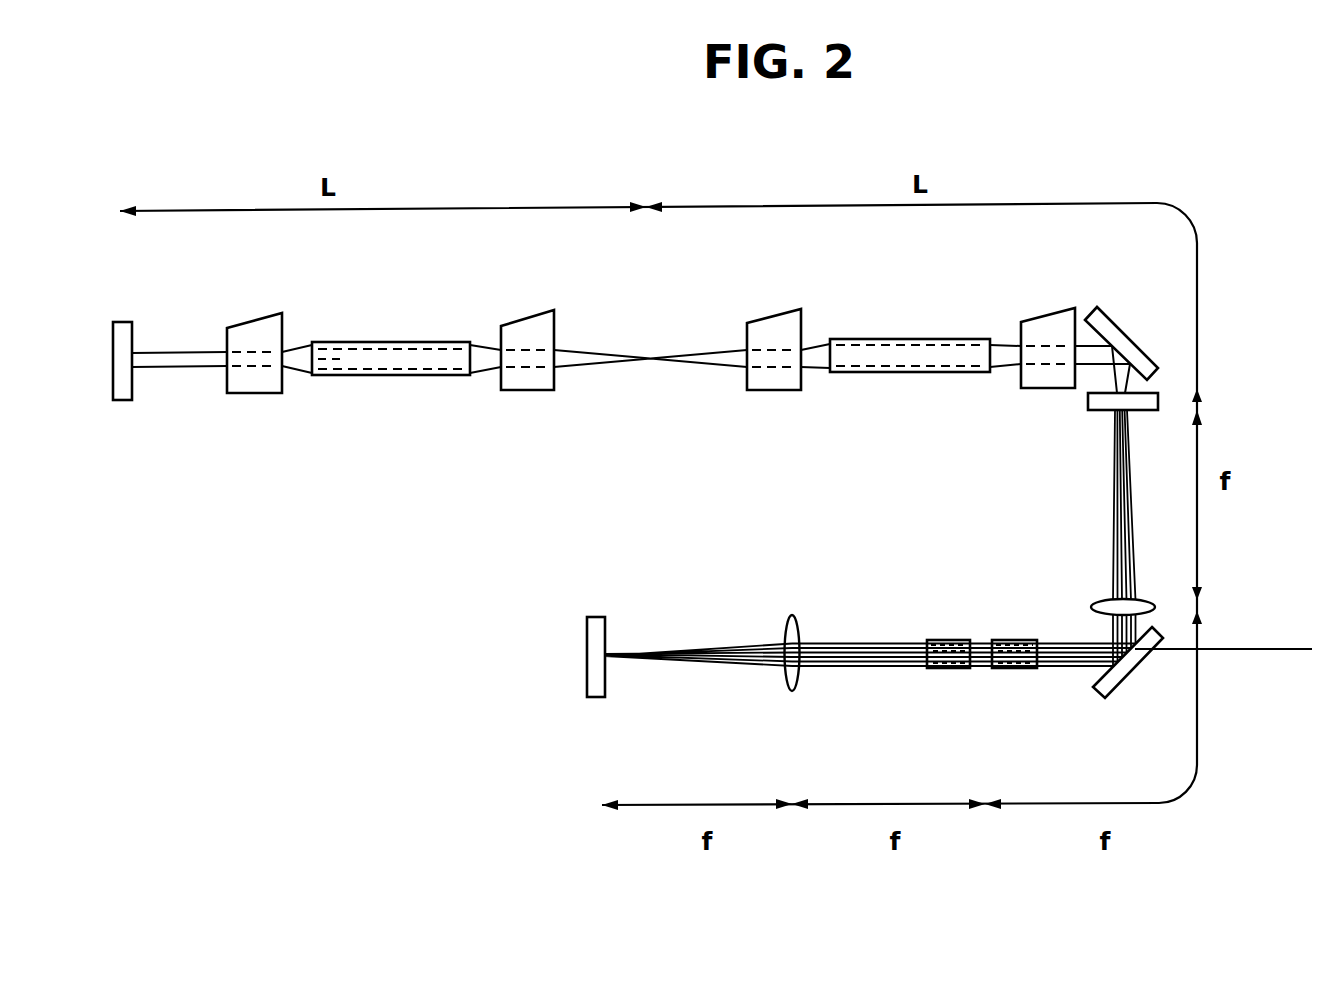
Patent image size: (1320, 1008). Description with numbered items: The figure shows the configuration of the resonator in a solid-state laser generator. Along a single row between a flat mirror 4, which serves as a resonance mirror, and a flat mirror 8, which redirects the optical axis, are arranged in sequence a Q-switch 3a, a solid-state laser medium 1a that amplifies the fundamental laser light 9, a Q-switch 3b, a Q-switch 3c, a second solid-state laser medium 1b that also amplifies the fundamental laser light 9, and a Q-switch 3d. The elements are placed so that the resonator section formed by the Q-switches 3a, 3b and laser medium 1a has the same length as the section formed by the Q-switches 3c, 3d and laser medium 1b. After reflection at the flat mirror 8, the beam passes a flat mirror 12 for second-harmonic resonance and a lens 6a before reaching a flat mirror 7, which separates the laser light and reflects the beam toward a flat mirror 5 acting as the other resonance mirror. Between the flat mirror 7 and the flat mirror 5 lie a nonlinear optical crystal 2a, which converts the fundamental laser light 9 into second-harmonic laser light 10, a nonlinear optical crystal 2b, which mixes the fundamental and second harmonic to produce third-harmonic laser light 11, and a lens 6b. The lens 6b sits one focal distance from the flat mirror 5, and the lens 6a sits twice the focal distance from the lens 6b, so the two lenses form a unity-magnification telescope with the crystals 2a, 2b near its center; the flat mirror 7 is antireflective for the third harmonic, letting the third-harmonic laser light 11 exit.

The solid-state laser medium 1a is at (385, 376).
The solid-state laser medium 1b is at (920, 373).
The nonlinear optical crystal 2a is at (948, 669).
The nonlinear optical crystal 2b is at (1015, 669).
The Q-switch 3a is at (256, 318).
The Q-switch 3b is at (530, 318).
The Q-switch 3c is at (780, 318).
The Q-switch 3d is at (1048, 312).
The flat mirror 4 is at (126, 401).
The flat mirror 5 is at (597, 698).
The lens 6a is at (1100, 603).
The lens 6b is at (792, 692).
The flat mirror 7 is at (1116, 692).
The flat mirror 8 is at (1122, 322).
The fundamental laser light 9 is at (650, 360).
The second-harmonic laser light 10 is at (1133, 574).
The third-harmonic laser light 11 is at (1272, 652).
The flat mirror 12 is at (1090, 411).